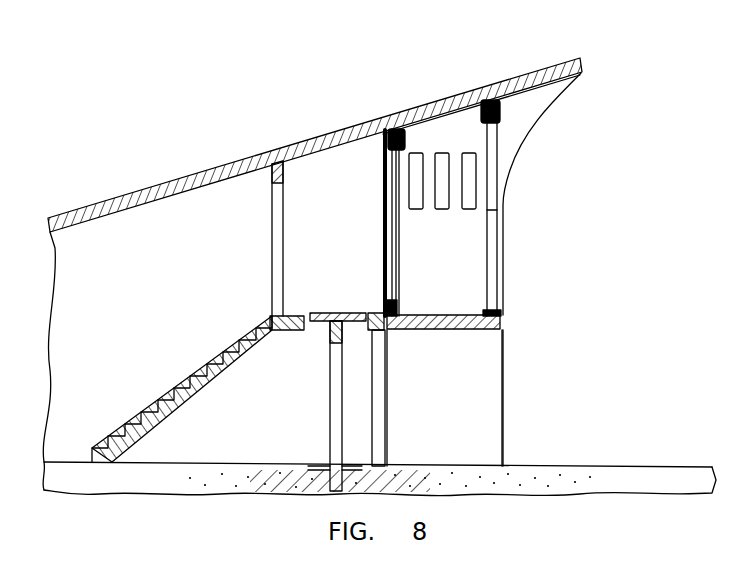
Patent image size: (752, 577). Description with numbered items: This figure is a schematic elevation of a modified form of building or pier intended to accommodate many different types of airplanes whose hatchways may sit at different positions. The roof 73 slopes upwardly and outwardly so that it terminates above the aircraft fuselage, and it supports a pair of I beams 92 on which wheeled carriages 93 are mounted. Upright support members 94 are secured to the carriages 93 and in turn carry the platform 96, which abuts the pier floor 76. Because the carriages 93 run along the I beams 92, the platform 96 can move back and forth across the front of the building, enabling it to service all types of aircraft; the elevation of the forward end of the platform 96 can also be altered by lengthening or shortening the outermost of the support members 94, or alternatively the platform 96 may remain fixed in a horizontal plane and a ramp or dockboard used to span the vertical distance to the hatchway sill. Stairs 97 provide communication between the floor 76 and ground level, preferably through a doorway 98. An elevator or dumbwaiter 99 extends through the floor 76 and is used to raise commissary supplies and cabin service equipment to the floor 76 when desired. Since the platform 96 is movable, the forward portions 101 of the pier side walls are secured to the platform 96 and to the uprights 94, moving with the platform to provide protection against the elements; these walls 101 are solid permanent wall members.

The roof 73 is at (521, 74).
The pier floor 76 is at (298, 311).
The I beams 92 is at (398, 126).
The wheeled carriages 93 is at (481, 115).
The upright support members 94 is at (488, 223).
The platform 96 is at (427, 315).
The stairs 97 is at (203, 386).
The doorway 98 is at (275, 232).
The elevator or dumbwaiter 99 is at (338, 309).
The forward portions of the pier side walls 101 is at (512, 147).